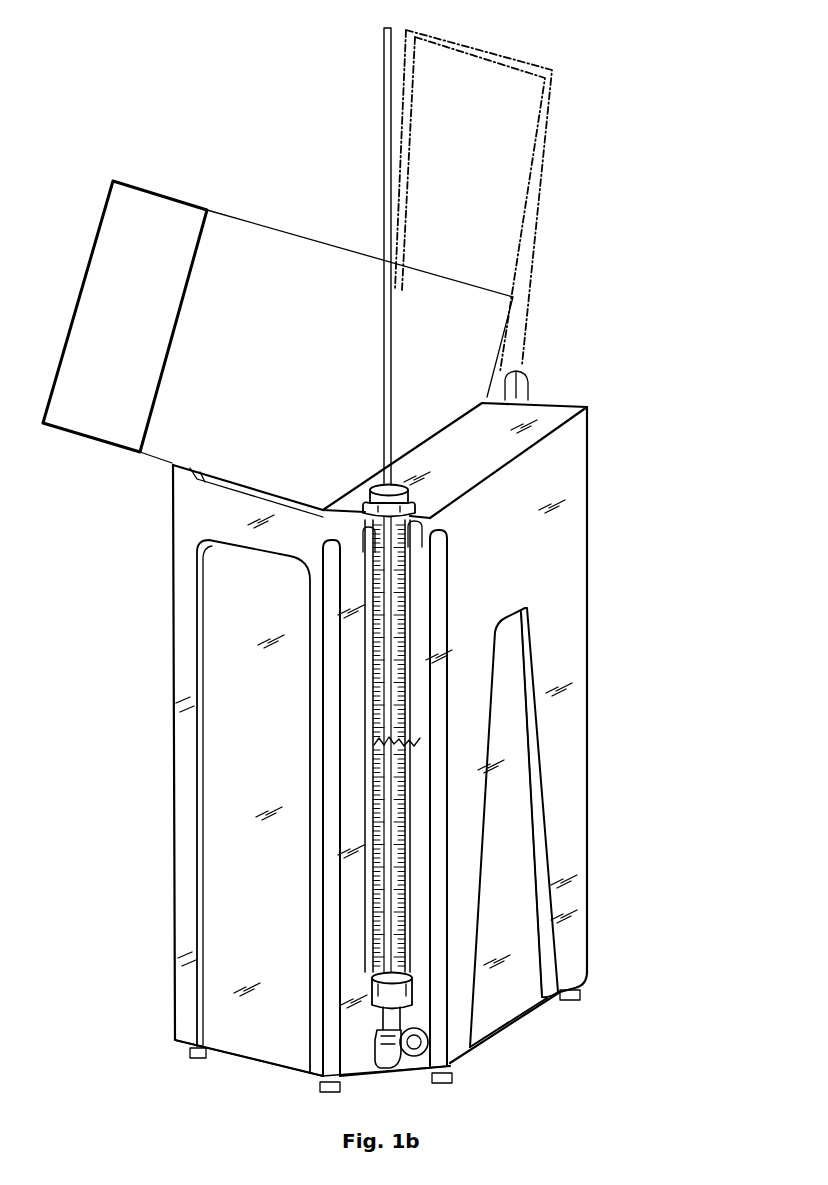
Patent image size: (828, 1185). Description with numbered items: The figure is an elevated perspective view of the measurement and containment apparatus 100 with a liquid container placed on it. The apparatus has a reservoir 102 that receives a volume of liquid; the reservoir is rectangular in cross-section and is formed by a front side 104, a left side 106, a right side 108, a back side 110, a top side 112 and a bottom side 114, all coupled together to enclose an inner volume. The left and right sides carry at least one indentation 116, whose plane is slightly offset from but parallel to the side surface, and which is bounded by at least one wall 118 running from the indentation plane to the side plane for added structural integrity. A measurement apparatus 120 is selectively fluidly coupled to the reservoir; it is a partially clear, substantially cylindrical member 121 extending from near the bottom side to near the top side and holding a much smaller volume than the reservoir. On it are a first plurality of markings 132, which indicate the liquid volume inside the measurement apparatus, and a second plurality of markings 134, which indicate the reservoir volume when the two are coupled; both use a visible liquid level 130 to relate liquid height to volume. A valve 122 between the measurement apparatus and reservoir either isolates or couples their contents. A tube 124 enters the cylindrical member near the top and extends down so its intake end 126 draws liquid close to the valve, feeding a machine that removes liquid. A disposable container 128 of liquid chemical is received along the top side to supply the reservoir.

The measurement and containment apparatus 100 is at (171, 112).
The reservoir 102 is at (504, 589).
The front side 104 is at (271, 701).
The left side 106 is at (166, 478).
The right side 108 is at (528, 946).
The back side 110 is at (590, 420).
The top side 112 is at (488, 464).
The bottom side 114 is at (278, 1073).
The indentation 116 is at (497, 657).
The wall 118 is at (540, 840).
The measurement apparatus 120 is at (417, 1010).
The cylindrical member 121 is at (408, 650).
The valve 122 is at (390, 1056).
The tube 124 is at (383, 115).
The intake end 126 is at (388, 963).
The disposable container 128 is at (248, 376).
The visible liquid level 130 is at (374, 745).
The first plurality of markings 132 is at (412, 591).
The second plurality of markings 134 is at (358, 596).